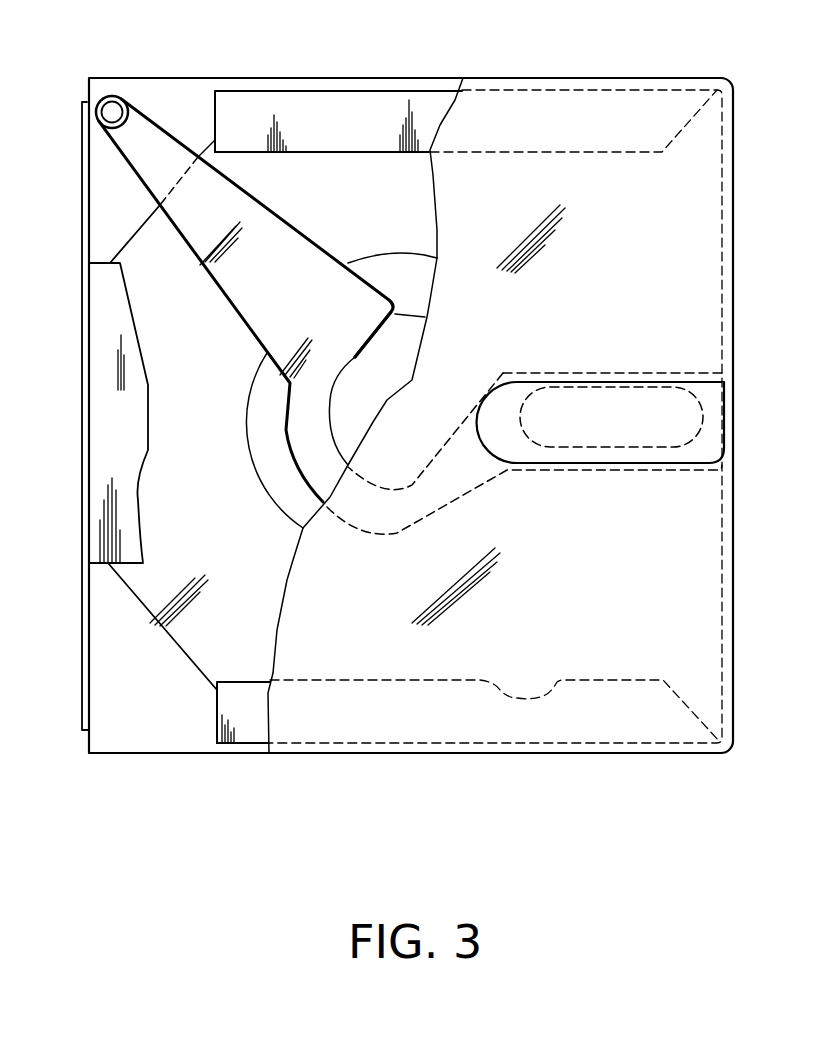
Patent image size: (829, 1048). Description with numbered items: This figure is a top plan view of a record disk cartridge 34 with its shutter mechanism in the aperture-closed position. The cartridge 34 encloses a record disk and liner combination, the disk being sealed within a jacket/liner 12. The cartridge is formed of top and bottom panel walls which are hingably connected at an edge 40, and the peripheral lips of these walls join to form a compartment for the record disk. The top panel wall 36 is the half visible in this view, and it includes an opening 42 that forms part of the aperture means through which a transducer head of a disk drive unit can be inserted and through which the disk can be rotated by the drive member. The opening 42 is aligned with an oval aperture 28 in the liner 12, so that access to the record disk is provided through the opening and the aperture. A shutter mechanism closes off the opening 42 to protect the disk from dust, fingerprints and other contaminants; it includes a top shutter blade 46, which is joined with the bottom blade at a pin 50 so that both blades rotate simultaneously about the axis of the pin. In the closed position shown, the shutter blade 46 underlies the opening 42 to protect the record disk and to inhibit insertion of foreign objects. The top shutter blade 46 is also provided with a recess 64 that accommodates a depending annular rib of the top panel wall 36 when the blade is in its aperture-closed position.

The record disk cartridge 34 is at (217, 67).
The edge 40 is at (80, 443).
The jacket/liner 12 is at (201, 417).
The top shutter blade 46 is at (284, 287).
The pin 50 is at (113, 106).
The recess 64 is at (352, 362).
The top panel wall 36 is at (597, 301).
The opening 42 is at (657, 457).
The oval aperture 28 is at (595, 433).